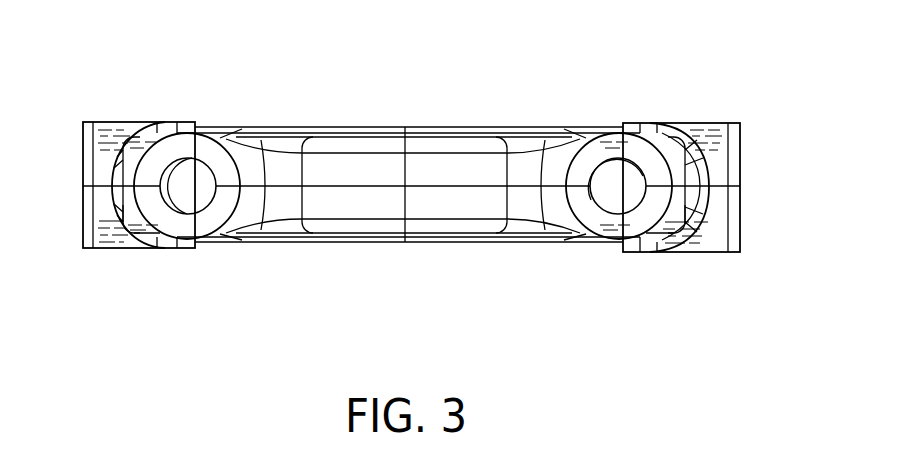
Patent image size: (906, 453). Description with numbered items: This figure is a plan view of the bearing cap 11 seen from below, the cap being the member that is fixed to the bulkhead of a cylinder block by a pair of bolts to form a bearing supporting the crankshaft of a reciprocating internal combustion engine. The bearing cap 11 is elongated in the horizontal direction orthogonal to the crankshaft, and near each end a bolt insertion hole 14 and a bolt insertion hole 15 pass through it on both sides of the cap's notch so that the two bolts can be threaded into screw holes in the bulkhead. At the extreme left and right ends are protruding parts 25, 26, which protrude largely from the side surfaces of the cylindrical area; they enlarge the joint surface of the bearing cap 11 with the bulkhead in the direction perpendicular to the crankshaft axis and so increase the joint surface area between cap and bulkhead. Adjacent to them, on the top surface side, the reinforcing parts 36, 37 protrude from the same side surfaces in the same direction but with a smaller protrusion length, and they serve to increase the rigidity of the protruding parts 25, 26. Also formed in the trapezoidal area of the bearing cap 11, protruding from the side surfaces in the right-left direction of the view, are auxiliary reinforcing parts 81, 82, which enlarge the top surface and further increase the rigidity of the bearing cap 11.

The bearing cap 11 is at (347, 262).
The bolt insertion hole 14 is at (184, 163).
The bolt insertion hole 15 is at (608, 160).
The protruding part 25 is at (110, 135).
The protruding part 26 is at (703, 137).
The reinforcing part 36 is at (110, 191).
The reinforcing part 37 is at (712, 200).
The auxiliary reinforcing part 81 is at (141, 227).
The auxiliary reinforcing part 82 is at (675, 221).